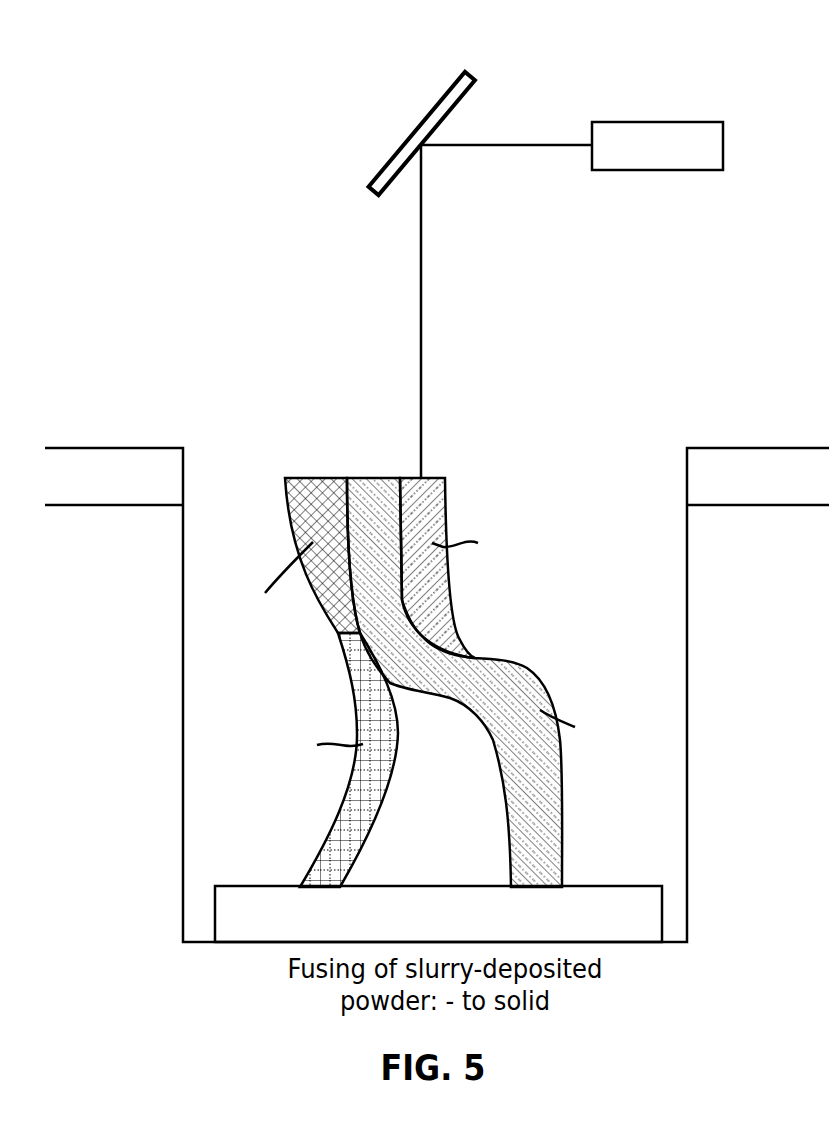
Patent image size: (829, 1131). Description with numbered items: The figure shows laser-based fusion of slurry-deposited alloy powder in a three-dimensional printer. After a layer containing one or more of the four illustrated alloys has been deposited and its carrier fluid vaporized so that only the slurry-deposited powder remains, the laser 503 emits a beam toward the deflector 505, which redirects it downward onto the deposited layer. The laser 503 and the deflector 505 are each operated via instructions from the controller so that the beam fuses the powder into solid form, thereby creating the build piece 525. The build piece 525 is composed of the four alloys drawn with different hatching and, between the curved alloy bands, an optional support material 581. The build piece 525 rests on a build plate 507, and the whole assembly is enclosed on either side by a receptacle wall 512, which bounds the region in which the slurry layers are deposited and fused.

The deflector 505 is at (397, 145).
The laser 503 is at (642, 157).
The receptacle wall 512 is at (158, 504).
The build piece 525 is at (283, 535).
The support material 581 is at (427, 831).
The build plate 507 is at (532, 931).